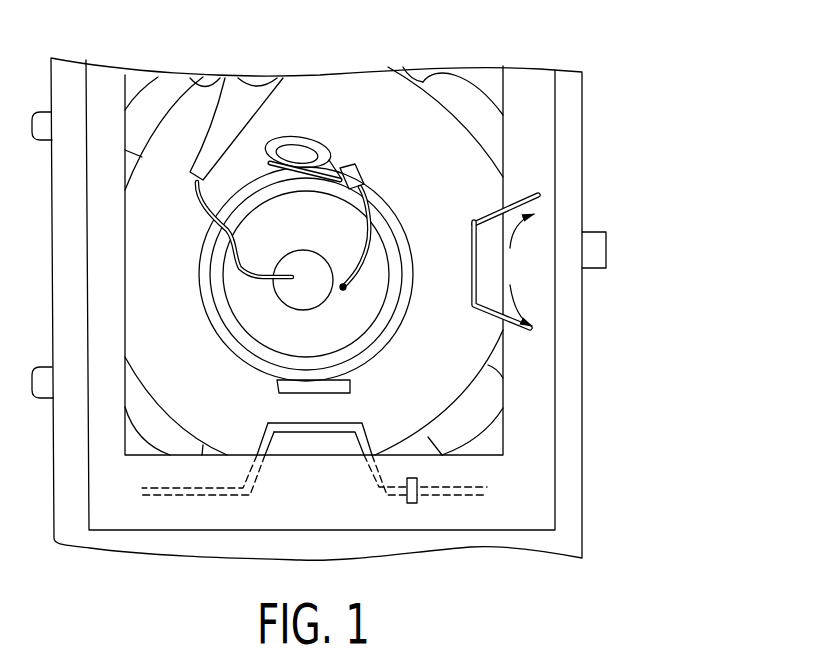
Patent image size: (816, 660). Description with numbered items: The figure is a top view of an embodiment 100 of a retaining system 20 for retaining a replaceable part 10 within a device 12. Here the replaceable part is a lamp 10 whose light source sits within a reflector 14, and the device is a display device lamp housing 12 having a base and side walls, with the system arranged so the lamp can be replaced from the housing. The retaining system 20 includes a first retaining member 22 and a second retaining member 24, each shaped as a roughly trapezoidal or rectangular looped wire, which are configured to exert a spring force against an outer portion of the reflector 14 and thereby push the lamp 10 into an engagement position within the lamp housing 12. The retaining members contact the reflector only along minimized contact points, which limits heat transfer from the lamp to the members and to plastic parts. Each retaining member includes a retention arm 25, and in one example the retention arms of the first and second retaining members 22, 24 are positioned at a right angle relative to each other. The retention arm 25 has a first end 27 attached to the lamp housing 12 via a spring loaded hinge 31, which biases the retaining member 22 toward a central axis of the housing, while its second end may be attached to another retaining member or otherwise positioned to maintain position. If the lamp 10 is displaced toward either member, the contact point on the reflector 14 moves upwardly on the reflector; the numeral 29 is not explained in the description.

The embodiment 100 is at (632, 80).
The replaceable part 10 is at (337, 97).
The device 12 is at (527, 82).
The reflector 14 is at (282, 117).
The retaining system 20 is at (449, 175).
The first retaining member 22 is at (473, 240).
The second retaining member 24 is at (266, 433).
The retention arm 25 is at (502, 203).
The first end 27 is at (518, 270).
The clip base 29 is at (472, 282).
The spring loaded hinge 31 is at (406, 461).